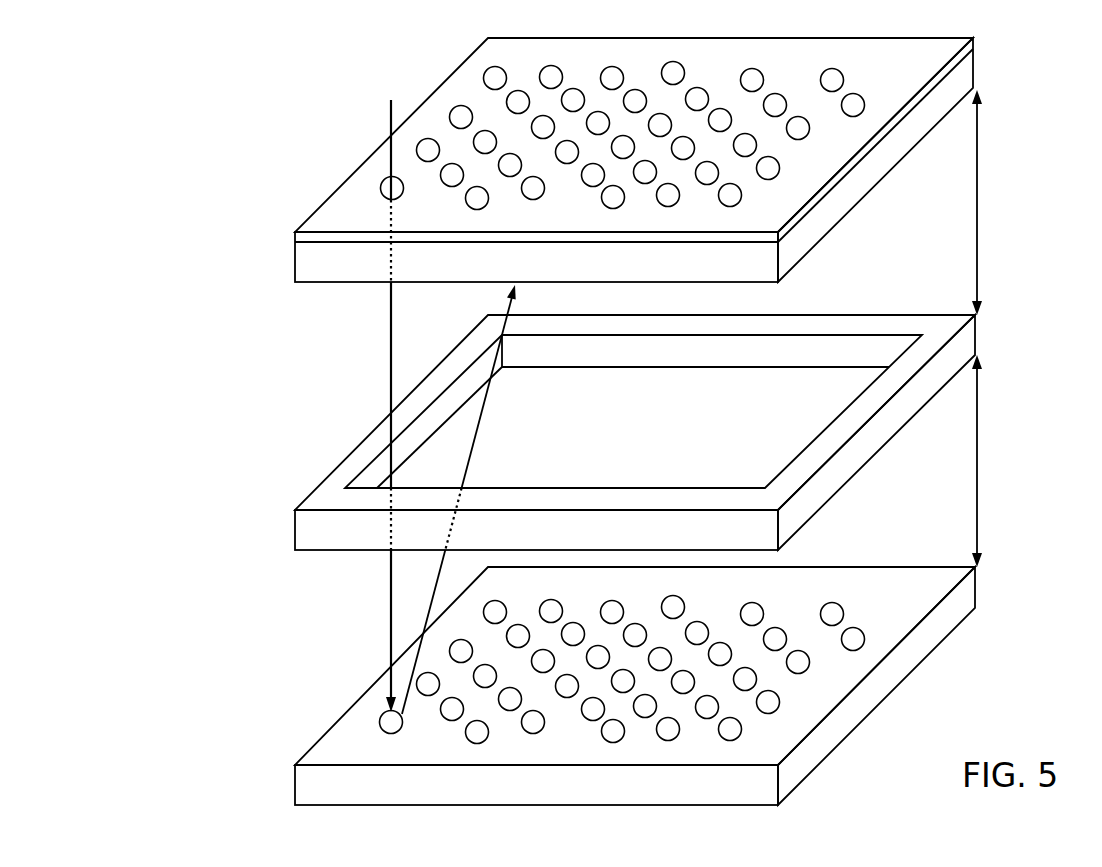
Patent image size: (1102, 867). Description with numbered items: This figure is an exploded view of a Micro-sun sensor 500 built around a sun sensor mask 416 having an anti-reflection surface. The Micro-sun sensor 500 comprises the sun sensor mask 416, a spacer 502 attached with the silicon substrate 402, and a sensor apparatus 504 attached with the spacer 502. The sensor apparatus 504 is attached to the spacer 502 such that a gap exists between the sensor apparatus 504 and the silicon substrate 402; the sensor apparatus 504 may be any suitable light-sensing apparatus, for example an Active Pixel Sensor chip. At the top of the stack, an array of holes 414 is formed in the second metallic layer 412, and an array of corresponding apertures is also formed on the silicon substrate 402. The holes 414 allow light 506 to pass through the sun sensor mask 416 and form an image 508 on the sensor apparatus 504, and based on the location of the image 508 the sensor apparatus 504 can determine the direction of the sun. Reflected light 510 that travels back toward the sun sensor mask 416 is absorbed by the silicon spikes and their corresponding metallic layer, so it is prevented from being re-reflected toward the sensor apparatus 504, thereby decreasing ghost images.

The Micro-sun sensor 500 is at (247, 99).
The silicon substrate 402 is at (290, 262).
The second metallic layer 412 is at (293, 232).
The array of holes 414 is at (460, 106).
The sun sensor mask 416 is at (992, 38).
The spacer 502 is at (293, 523).
The sensor apparatus 504 is at (293, 783).
The light 506 is at (390, 133).
The image 508 is at (383, 717).
The reflected light 510 is at (478, 430).